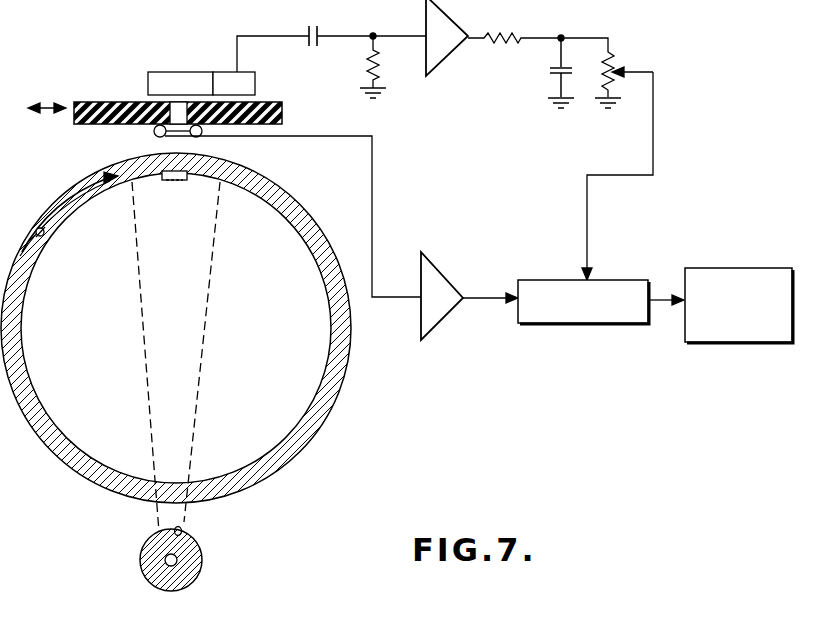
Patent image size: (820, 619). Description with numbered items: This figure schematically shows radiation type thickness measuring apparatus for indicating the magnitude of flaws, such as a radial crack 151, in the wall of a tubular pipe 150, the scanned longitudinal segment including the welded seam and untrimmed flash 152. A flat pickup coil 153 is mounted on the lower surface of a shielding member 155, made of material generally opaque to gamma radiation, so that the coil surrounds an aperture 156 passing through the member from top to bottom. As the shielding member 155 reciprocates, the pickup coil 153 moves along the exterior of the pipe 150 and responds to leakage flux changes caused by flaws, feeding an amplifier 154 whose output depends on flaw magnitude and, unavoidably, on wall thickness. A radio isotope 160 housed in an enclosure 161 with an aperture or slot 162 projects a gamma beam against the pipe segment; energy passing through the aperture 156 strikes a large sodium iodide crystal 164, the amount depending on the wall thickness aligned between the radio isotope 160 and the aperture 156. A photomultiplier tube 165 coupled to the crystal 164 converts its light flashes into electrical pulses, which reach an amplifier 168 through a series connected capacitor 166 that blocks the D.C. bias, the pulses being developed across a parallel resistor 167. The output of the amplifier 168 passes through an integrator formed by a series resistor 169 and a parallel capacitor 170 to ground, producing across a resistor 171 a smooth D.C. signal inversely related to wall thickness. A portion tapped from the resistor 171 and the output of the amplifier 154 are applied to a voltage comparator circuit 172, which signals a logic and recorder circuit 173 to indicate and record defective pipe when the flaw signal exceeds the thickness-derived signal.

The tubular pipe 150 is at (30, 392).
The radial crack 151 is at (173, 181).
The untrimmed flash 152 is at (163, 180).
The flat pickup coil 153 is at (153, 133).
The amplifier 154 is at (444, 276).
The shielding member 155 is at (283, 113).
The aperture 156 is at (172, 106).
The radio isotope 160 is at (178, 559).
The enclosure 161 is at (195, 580).
The aperture or slot 162 is at (182, 528).
The sodium iodide crystal 164 is at (161, 72).
The photomultiplier tube 165 is at (256, 85).
The series connected capacitor 166 is at (310, 33).
The parallel resistor 167 is at (371, 64).
The amplifier 168 is at (452, 22).
The series resistor 169 is at (501, 50).
The parallel capacitor 170 is at (555, 74).
The resistor 171 is at (611, 60).
The voltage comparator circuit 172 is at (565, 324).
The logic and recorder circuit 173 is at (727, 343).